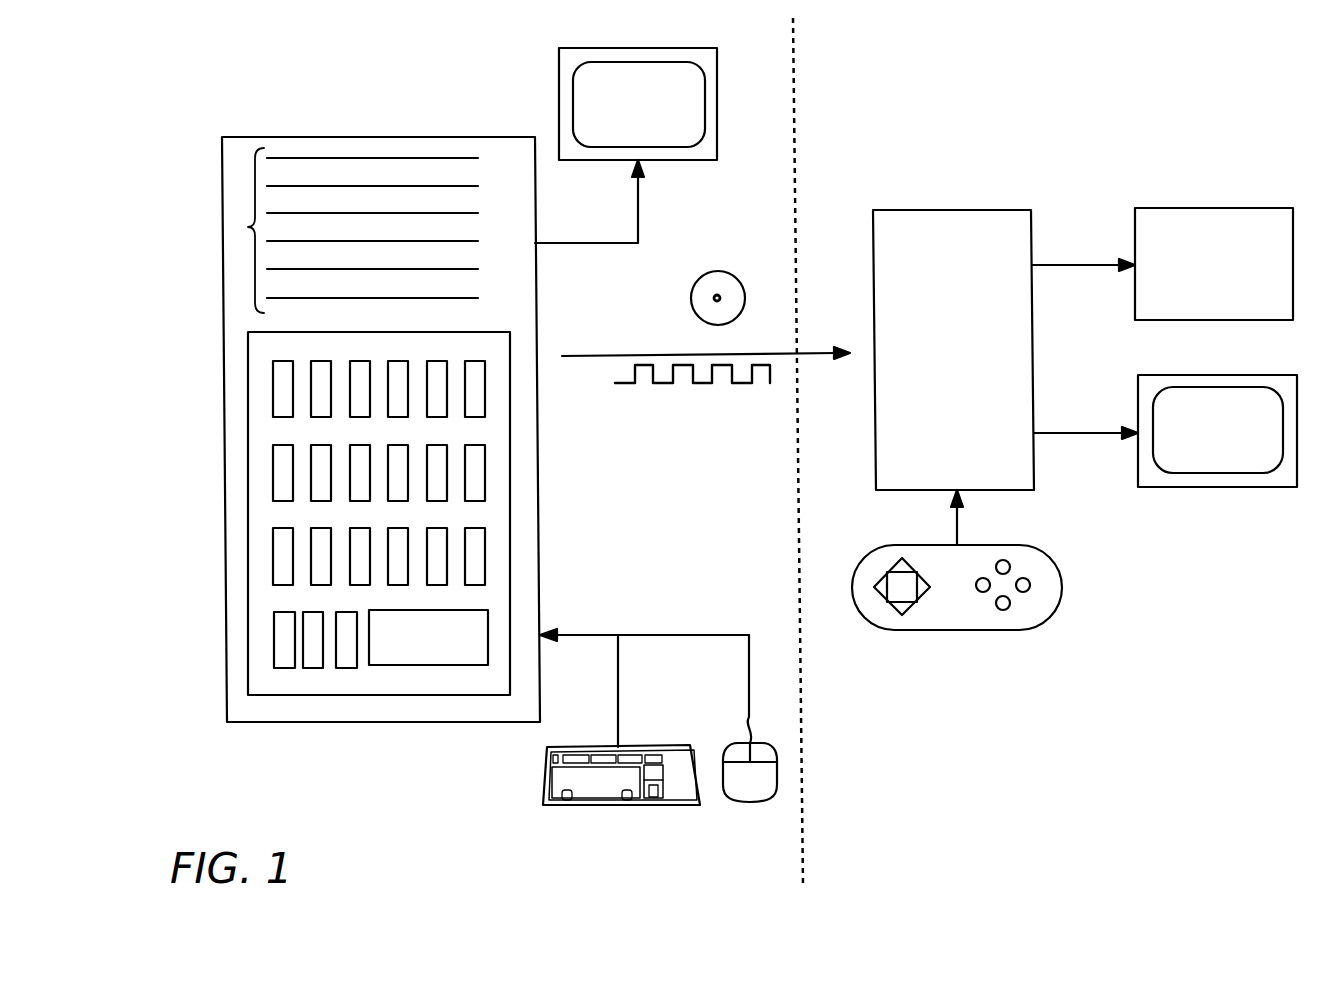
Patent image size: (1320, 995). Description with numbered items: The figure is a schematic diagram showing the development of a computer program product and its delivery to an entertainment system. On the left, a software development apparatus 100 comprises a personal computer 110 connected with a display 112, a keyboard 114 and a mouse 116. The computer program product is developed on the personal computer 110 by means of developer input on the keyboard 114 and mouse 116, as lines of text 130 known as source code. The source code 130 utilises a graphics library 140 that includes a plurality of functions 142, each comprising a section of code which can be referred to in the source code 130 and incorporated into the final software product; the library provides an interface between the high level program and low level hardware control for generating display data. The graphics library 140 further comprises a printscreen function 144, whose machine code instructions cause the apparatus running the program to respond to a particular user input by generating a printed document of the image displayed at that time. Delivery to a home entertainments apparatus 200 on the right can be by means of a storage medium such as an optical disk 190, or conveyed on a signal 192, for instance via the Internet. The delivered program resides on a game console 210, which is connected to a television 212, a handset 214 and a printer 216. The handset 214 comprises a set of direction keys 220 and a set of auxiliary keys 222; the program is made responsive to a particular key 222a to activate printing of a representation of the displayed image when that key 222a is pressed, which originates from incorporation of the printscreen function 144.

The software development apparatus 100 is at (536, 858).
The personal computer 110 is at (374, 137).
The display 112 is at (587, 102).
The keyboard 114 is at (645, 745).
The mouse 116 is at (750, 802).
The lines of text 130 is at (250, 227).
The graphics library 140 is at (248, 583).
The functions 142 is at (285, 474).
The printscreen function 144 is at (437, 665).
The optical disk 190 is at (718, 270).
The signal 192 is at (730, 385).
The home entertainments apparatus 200 is at (1084, 852).
The game console 210 is at (950, 210).
The television 212 is at (1220, 487).
The handset 214 is at (962, 630).
The printer 216 is at (1213, 208).
The direction keys 220 is at (891, 614).
The auxiliary keys 222 is at (1033, 610).
The key 222a is at (1030, 584).